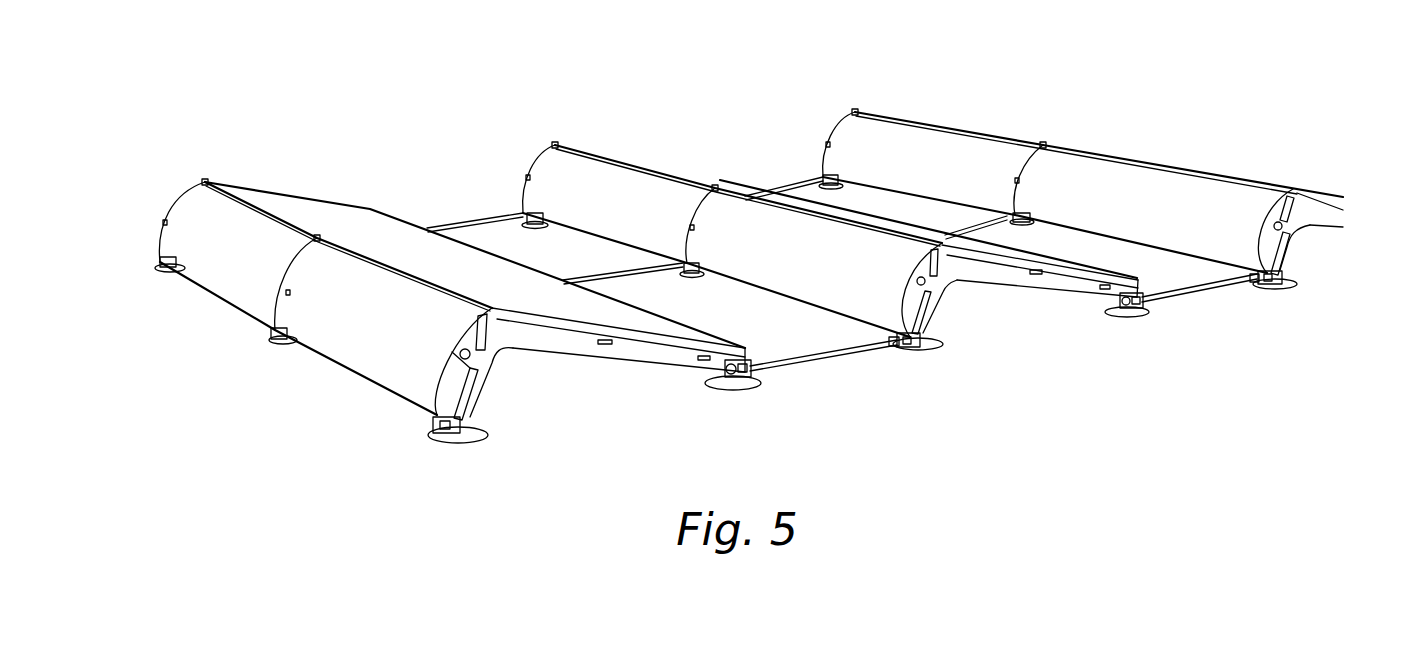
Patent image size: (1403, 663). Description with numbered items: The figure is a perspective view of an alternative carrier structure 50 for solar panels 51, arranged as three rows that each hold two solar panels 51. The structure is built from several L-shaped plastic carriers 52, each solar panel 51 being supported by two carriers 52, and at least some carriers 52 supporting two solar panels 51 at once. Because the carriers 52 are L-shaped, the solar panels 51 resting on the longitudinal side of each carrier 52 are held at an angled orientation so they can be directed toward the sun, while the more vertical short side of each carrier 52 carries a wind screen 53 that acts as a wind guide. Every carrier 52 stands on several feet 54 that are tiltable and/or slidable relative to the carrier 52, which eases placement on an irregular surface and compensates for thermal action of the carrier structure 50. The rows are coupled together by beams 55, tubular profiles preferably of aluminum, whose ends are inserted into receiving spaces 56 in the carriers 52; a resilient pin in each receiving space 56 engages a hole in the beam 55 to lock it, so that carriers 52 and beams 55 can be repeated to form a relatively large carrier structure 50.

The carrier structure 50 is at (203, 86).
The solar panel 51 is at (348, 222).
The L-shaped plastic carrier 52 is at (158, 260).
The wind screen 53 is at (211, 251).
The foot 54 is at (160, 272).
The beam 55 is at (800, 362).
The receiving space 56 is at (893, 348).